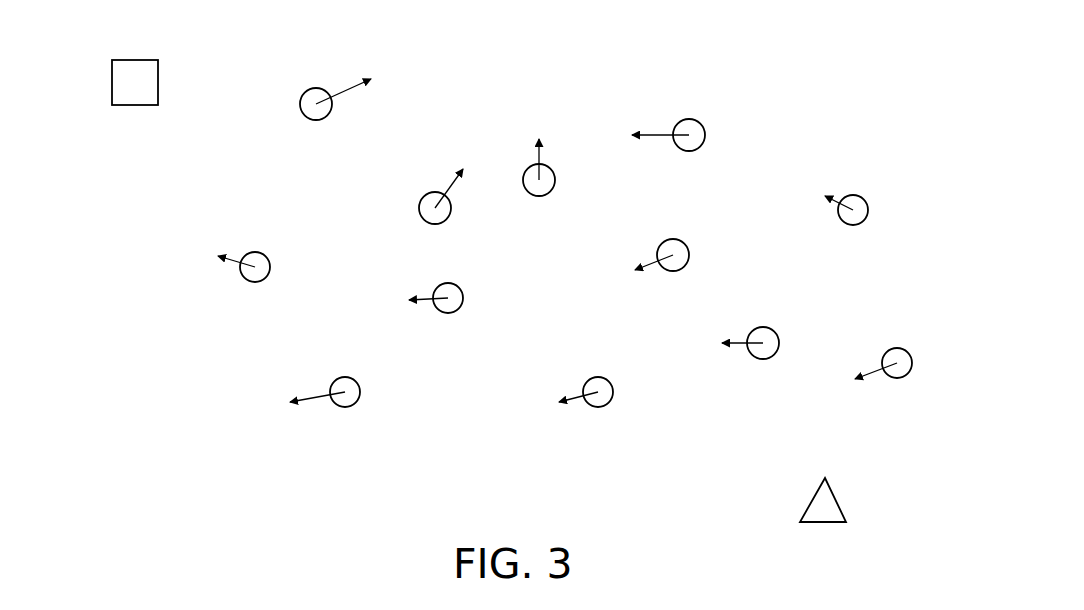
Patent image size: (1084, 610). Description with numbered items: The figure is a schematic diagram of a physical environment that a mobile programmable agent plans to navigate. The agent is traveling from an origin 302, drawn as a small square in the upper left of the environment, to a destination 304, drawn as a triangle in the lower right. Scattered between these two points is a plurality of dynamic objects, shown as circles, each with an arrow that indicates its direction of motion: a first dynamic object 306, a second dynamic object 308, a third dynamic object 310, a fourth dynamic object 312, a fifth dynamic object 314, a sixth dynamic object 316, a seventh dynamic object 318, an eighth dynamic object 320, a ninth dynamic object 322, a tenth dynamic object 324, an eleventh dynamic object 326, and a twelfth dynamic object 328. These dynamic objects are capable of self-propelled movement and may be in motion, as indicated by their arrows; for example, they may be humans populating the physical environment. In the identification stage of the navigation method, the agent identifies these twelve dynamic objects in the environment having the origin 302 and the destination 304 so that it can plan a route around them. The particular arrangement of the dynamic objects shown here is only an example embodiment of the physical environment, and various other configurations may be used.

The origin 302 is at (135, 58).
The destination 304 is at (848, 508).
The first dynamic object 306 is at (247, 282).
The second dynamic object 308 is at (310, 88).
The third dynamic object 310 is at (420, 196).
The fourth dynamic object 312 is at (352, 407).
The fifth dynamic object 314 is at (460, 311).
The sixth dynamic object 316 is at (548, 194).
The seventh dynamic object 318 is at (598, 408).
The eighth dynamic object 320 is at (688, 272).
The ninth dynamic object 322 is at (695, 120).
The tenth dynamic object 324 is at (772, 360).
The eleventh dynamic object 326 is at (868, 210).
The twelfth dynamic object 328 is at (912, 370).